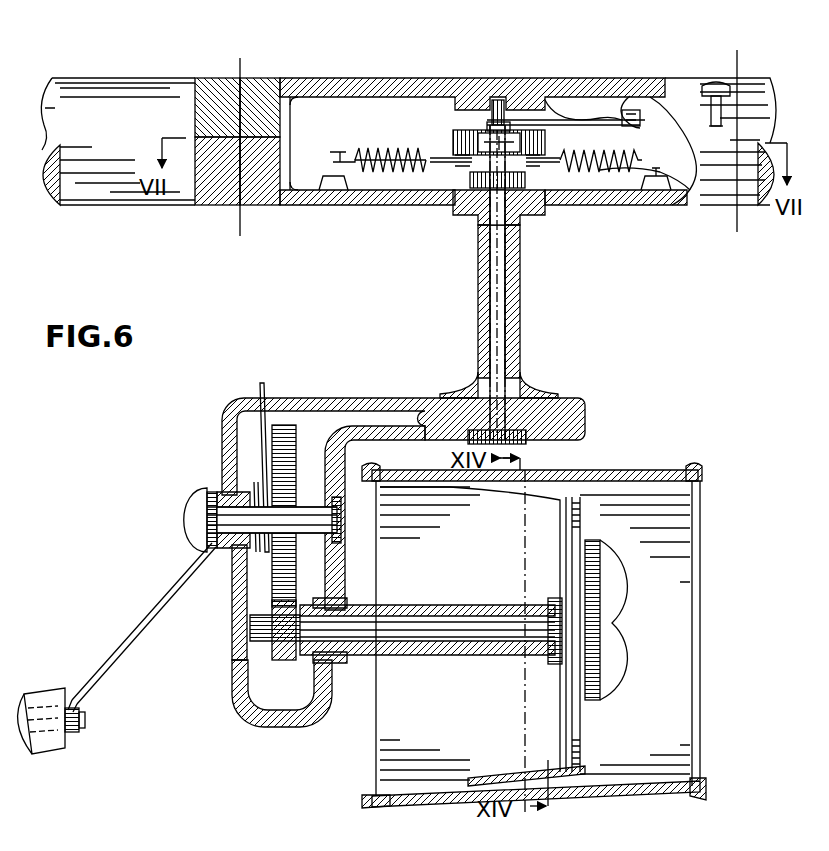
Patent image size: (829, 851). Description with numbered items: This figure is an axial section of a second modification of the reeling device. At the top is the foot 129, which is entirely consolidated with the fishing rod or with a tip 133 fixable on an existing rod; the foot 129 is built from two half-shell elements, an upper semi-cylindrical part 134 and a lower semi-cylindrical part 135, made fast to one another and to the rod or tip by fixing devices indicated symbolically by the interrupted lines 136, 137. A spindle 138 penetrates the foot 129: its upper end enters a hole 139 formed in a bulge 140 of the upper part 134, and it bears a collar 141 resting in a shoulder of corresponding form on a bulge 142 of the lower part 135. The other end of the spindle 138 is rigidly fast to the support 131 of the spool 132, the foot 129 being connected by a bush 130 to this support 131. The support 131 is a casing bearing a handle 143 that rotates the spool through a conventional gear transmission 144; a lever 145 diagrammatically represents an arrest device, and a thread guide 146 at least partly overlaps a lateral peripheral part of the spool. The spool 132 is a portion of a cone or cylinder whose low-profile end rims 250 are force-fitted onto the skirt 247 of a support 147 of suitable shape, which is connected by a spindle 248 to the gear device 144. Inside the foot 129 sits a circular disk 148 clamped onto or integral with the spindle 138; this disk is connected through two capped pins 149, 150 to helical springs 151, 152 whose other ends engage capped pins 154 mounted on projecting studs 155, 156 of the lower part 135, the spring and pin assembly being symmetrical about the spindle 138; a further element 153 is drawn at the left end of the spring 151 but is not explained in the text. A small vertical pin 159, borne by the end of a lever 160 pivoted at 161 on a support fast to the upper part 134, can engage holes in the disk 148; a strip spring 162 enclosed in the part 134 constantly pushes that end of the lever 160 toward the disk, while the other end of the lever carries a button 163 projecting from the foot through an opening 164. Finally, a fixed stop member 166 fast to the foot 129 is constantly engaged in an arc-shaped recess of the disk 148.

The foot 129 is at (196, 207).
The bush 130 is at (520, 327).
The support 131 is at (232, 413).
The spool 132 is at (615, 470).
The tip 133 is at (87, 95).
The upper semi-cylindrical part 134 is at (262, 80).
The lower semi-cylindrical part 135 is at (272, 207).
The fixing device 136 is at (240, 68).
The fixing device 137 is at (737, 52).
The spindle 138 is at (498, 257).
The hole 139 is at (491, 97).
The bulge 140 is at (465, 100).
The collar 141 is at (478, 205).
The bulge 142 is at (525, 200).
The handle 143 is at (128, 634).
The gear transmission 144 is at (272, 590).
The lever 145 is at (268, 385).
The thread guide 146 is at (377, 482).
The support 147 is at (590, 742).
The circular disk 148 is at (455, 140).
The capped pin 149 is at (452, 163).
The capped pin 150 is at (543, 188).
The helical spring 151 is at (375, 148).
The helical spring 152 is at (608, 176).
The bracket 153 is at (332, 160).
The capped pin 154 is at (693, 190).
The projecting stud 155 is at (333, 192).
The projecting stud 156 is at (656, 192).
The small pin 159 is at (488, 128).
The lever 160 is at (632, 128).
The pivot 161 is at (630, 96).
The strip spring 162 is at (560, 100).
The button 163 is at (715, 84).
The opening 164 is at (760, 88).
The fixed stop member 166 is at (512, 118).
The skirt 247 is at (498, 776).
The spindle 248 is at (450, 652).
The end rim 250 is at (692, 466).